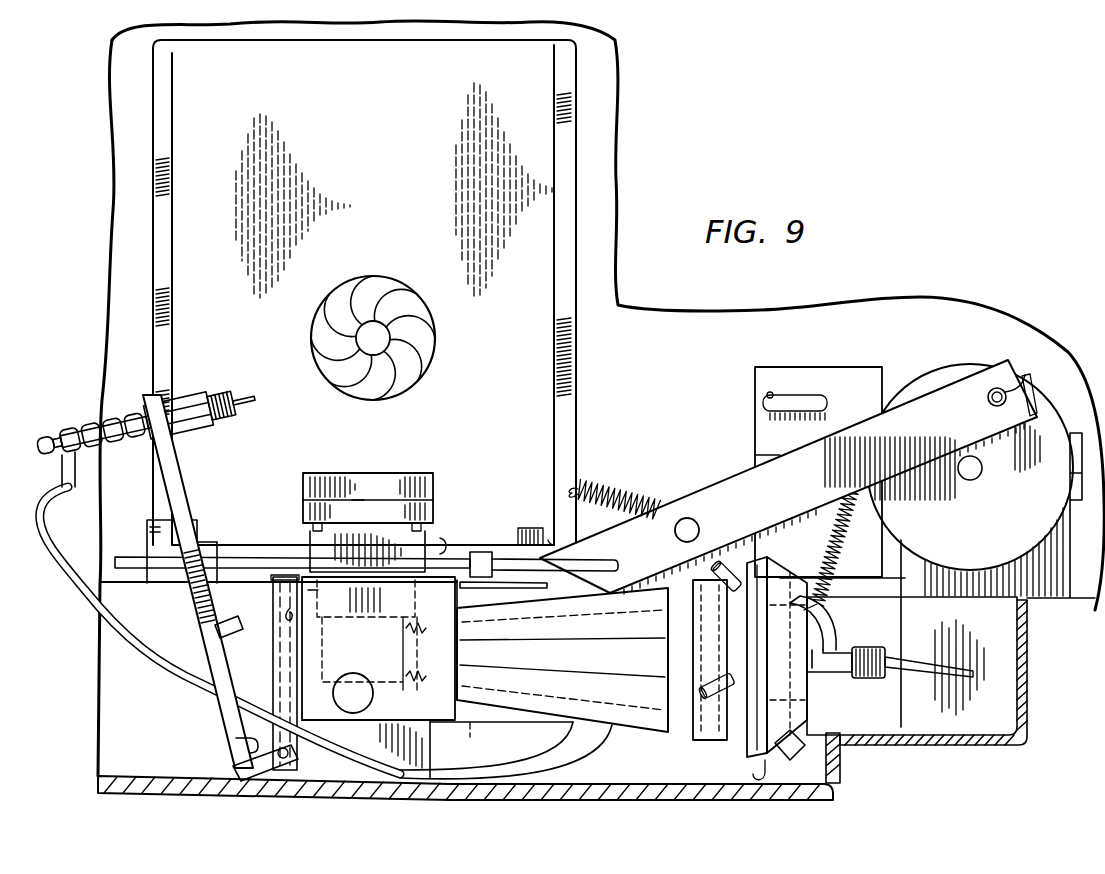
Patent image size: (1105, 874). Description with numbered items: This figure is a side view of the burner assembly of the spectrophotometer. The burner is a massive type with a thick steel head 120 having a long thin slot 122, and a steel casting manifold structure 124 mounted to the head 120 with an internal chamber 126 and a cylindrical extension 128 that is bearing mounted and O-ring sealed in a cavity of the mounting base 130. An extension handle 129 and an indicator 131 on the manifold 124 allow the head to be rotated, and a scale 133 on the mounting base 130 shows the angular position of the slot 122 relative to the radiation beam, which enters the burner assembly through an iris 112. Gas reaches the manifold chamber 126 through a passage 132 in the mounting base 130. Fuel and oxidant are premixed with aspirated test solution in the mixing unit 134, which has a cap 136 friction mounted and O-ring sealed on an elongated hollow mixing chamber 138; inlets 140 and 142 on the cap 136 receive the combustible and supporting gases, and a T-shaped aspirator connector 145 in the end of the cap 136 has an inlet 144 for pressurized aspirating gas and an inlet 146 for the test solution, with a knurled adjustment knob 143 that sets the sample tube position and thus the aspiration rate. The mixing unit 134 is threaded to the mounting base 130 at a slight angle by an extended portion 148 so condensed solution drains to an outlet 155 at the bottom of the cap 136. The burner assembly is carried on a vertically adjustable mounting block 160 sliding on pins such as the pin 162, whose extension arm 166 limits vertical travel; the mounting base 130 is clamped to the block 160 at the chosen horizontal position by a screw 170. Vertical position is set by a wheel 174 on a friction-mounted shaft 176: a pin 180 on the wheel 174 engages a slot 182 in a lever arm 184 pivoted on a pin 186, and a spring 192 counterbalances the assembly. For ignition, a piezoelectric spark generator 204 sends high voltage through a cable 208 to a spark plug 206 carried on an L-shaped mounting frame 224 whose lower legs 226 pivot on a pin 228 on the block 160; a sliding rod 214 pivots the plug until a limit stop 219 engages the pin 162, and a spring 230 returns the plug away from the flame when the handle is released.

The iris 112 is at (374, 277).
The burner head 120 is at (395, 473).
The slot 122 is at (358, 500).
The manifold structure 124 is at (306, 512).
The chamber 126 is at (442, 545).
The cylindrical extension 128 is at (313, 590).
The extension handle 129 is at (602, 562).
The mounting base 130 is at (314, 640).
The indicator 131 is at (484, 553).
The passage 132 is at (325, 622).
The scale 133 is at (548, 584).
The mixing unit 134 is at (546, 668).
The cap 136 is at (805, 697).
The mixing chamber 138 is at (578, 728).
The inlet 140 is at (732, 560).
The inlet 142 is at (718, 700).
The adjustment knob 143 is at (868, 650).
The aspirator gas inlet 144 is at (835, 632).
The aspirator connector 145 is at (838, 675).
The inlet 146 is at (925, 673).
The extended portion 148 is at (470, 737).
The outlet 155 is at (800, 752).
The mounting block 160 is at (303, 762).
The pin 162 is at (282, 680).
The extension arm 166 is at (292, 608).
The screw 170 is at (366, 692).
The wheel 174 is at (918, 388).
The shaft 176 is at (963, 477).
The pin 180 is at (1018, 375).
The slot 182 is at (1025, 420).
The lever arm 184 is at (941, 372).
The pin 186 is at (690, 518).
The spring 192 is at (829, 553).
The piezoelectric spark generator 204 is at (755, 385).
The spark plug 206 is at (92, 423).
The cable 208 is at (172, 666).
The rod 214 is at (246, 557).
The limit stop 219 is at (254, 630).
The L-shaped mounting frame 224 is at (180, 464).
The lower legs 226 is at (241, 741).
The pin 228 is at (239, 766).
The spring 230 is at (646, 494).